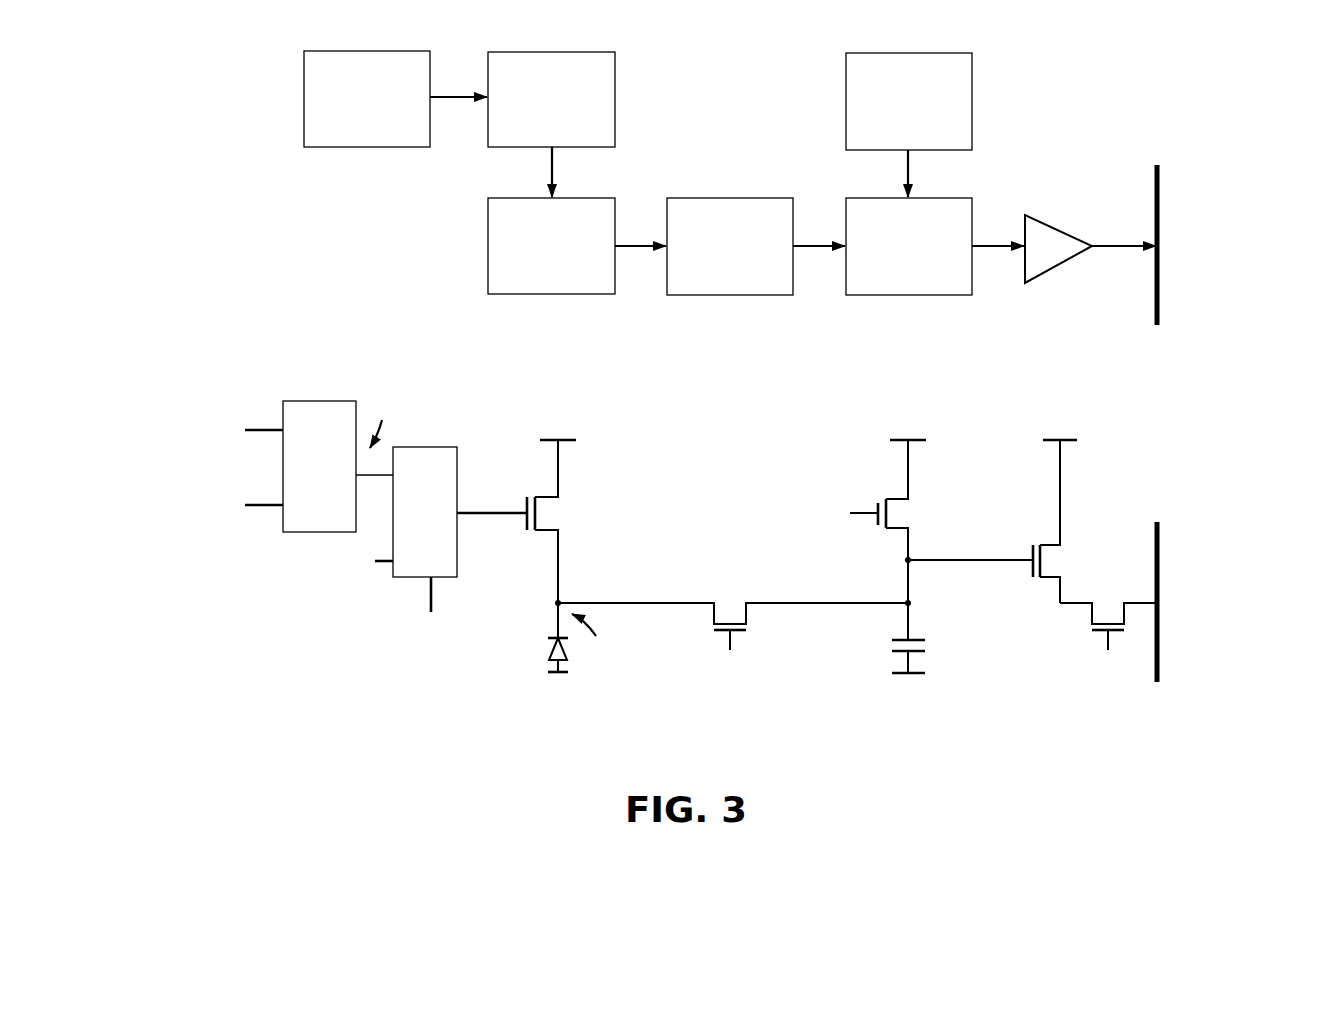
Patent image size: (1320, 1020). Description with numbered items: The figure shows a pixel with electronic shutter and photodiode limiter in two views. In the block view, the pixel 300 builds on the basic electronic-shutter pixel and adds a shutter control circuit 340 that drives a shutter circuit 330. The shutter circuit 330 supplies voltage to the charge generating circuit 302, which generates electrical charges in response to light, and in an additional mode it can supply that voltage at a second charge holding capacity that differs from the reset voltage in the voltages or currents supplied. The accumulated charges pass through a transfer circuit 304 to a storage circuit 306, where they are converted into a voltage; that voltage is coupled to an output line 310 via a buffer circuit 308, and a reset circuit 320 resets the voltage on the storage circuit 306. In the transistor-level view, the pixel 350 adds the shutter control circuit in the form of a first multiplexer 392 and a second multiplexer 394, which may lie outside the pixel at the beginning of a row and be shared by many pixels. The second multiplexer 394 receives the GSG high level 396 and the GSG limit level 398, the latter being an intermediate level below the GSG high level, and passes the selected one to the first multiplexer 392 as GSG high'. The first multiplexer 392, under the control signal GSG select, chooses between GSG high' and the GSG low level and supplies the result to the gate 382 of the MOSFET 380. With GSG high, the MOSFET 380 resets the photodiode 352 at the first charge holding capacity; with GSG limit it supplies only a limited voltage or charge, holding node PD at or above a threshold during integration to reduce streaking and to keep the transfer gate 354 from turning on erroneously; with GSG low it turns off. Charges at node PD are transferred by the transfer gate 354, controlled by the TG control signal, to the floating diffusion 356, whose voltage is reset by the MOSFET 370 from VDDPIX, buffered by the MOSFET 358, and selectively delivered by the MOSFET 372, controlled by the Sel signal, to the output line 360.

The pixel 300 is at (163, 135).
The shutter control circuit 340 is at (367, 99).
The shutter circuit 330 is at (551, 99).
The charge generating circuit 302 is at (551, 246).
The transfer circuit 304 is at (730, 246).
The reset circuit 320 is at (909, 101).
The storage circuit 306 is at (909, 246).
The buffer circuit 308 is at (1066, 274).
The output line 310 is at (1200, 160).
The pixel 350 is at (160, 430).
The second multiplexer 394 is at (338, 466).
The GSG high signal 396 is at (280, 418).
The GSG limit signal 398 is at (277, 510).
The first multiplexer 392 is at (425, 512).
The gate 382 is at (508, 530).
The MOSFET 380 is at (525, 493).
The photodiode 352 is at (530, 670).
The transfer gate 354 is at (740, 592).
The floating diffusion 356 is at (882, 664).
The MOSFET 370 is at (888, 487).
The MOSFET 358 is at (1042, 590).
The select transistor 372 is at (1082, 645).
The output line 360 is at (1205, 527).